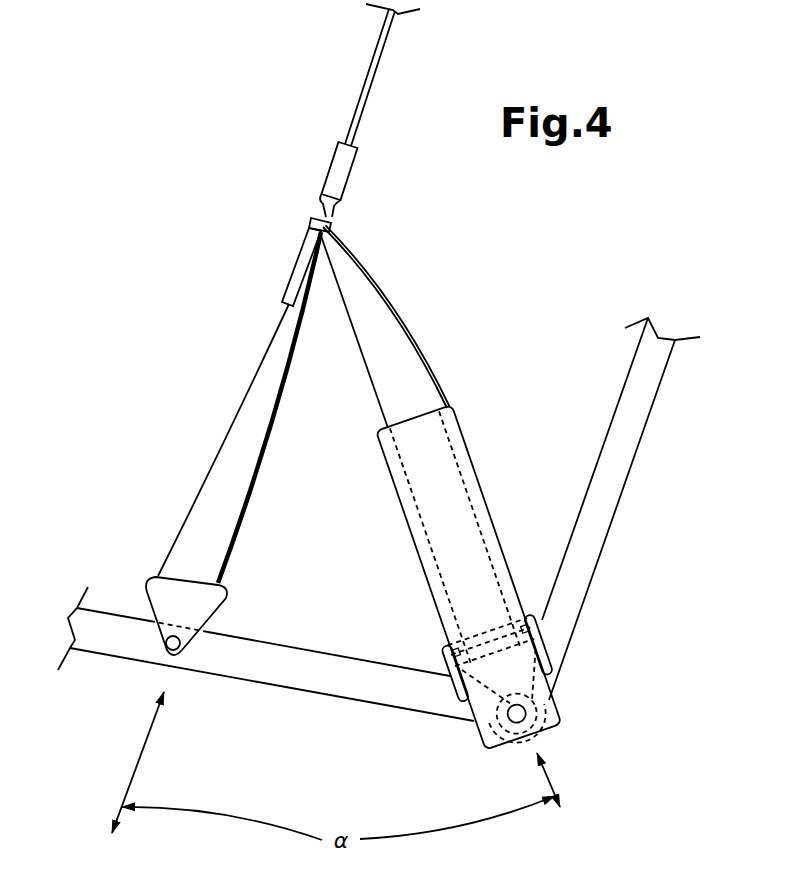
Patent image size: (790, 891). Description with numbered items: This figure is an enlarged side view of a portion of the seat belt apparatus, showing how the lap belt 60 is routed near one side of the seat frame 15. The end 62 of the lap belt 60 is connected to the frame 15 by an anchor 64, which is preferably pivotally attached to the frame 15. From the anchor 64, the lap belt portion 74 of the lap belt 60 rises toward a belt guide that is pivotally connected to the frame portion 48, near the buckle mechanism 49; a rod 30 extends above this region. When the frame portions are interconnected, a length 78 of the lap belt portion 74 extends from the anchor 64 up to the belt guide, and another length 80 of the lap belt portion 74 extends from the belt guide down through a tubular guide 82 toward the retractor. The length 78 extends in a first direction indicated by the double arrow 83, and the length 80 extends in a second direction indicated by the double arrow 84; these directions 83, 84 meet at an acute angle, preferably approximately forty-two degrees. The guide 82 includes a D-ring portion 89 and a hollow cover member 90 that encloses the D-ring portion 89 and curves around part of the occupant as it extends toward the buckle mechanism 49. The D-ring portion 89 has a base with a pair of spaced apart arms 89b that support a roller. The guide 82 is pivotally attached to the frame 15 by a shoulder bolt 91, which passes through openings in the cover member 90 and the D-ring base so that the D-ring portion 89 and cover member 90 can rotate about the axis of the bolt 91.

The frame 15 is at (640, 377).
The seat post rod 30 is at (362, 93).
The frame portion 48 is at (340, 163).
The buckle mechanism 49 is at (282, 226).
The lap belt 60 is at (293, 323).
The end of the lap belt 62 is at (227, 407).
The anchor 64 is at (162, 602).
The lap belt portion 74 is at (385, 301).
The length of the lap belt portion 78 is at (250, 450).
The length of the lap belt portion 80 is at (385, 343).
The tubular guide 82 is at (469, 587).
The double arrow 83 is at (142, 755).
The double arrow 84 is at (548, 775).
The D-ring portion 89 is at (556, 655).
The arms 89b is at (449, 637).
The hollow cover member 90 is at (477, 504).
The bolt 91 is at (518, 713).